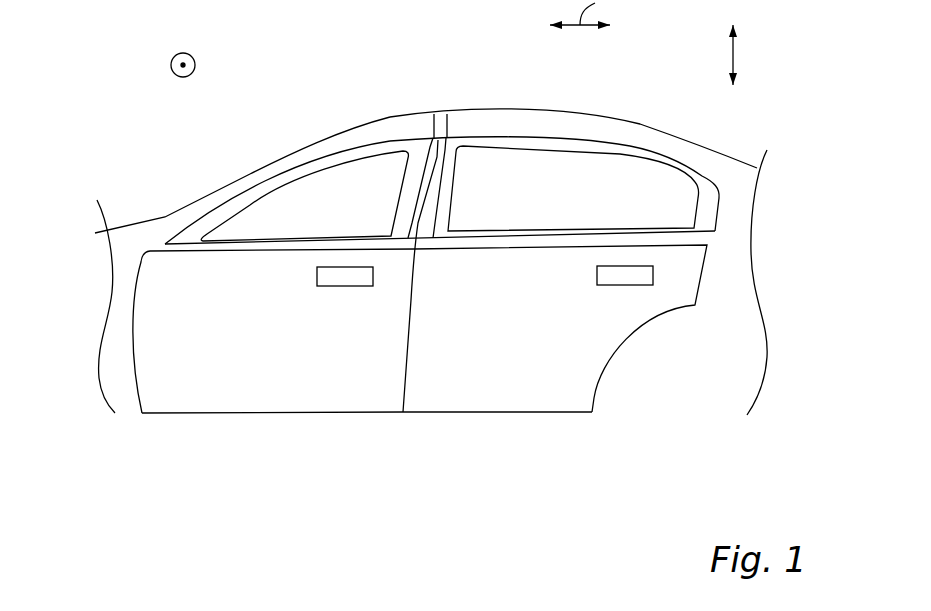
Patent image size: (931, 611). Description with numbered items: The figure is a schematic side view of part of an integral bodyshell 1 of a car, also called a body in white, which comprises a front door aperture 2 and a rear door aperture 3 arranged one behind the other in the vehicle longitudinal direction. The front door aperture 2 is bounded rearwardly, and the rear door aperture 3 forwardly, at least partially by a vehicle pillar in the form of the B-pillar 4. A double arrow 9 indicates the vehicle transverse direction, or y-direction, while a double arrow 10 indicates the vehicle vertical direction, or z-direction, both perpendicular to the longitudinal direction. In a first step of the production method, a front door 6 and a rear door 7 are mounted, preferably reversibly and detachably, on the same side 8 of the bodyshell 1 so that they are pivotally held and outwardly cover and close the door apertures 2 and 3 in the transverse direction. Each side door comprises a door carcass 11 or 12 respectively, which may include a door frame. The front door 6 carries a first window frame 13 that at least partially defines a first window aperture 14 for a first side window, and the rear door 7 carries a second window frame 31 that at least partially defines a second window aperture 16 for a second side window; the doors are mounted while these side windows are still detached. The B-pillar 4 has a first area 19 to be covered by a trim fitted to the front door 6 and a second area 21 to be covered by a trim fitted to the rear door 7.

The integral bodyshell 1 is at (578, 115).
The front door aperture 2 is at (277, 163).
The rear door aperture 3 is at (630, 143).
The B-pillar 4 is at (436, 113).
The front door 6 is at (307, 418).
The rear door 7 is at (550, 420).
The side 8 is at (187, 200).
The double arrow 9 is at (171, 65).
The double arrow 10 is at (735, 55).
The door carcass 11 is at (202, 420).
The door carcass 12 is at (457, 420).
The first window frame 13 is at (240, 190).
The first window aperture 14 is at (338, 212).
The second window aperture 16 is at (577, 211).
The first area 19 is at (430, 123).
The second area 21 is at (450, 122).
The second window frame 31 is at (665, 162).